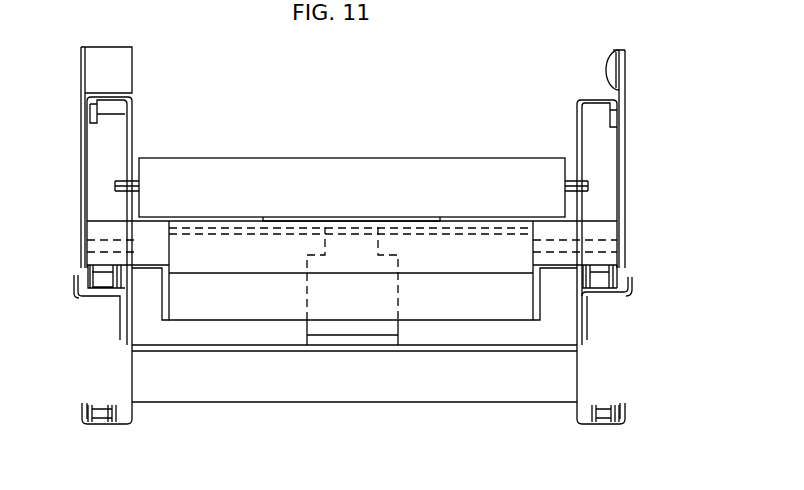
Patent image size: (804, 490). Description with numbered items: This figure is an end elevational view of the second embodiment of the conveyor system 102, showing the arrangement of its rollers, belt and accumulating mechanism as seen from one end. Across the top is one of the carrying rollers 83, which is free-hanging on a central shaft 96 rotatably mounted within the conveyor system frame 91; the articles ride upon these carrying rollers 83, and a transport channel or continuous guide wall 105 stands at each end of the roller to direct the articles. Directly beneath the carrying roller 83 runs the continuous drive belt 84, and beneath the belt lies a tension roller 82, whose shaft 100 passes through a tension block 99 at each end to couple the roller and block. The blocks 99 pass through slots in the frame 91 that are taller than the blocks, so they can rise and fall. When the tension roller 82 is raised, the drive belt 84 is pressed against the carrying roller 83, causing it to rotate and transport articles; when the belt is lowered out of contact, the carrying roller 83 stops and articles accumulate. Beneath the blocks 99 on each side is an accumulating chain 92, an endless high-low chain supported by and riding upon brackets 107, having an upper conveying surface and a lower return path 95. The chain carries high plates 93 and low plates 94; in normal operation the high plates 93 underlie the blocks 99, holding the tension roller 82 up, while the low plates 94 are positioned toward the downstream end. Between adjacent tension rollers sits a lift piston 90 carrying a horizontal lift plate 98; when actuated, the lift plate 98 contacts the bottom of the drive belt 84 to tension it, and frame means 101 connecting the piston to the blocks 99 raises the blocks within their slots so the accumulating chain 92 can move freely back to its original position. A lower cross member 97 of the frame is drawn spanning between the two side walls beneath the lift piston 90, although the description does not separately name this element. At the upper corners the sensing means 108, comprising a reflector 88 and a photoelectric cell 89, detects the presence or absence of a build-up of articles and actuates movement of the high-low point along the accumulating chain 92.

The tension roller 82 is at (448, 262).
The carrying roller 83 is at (420, 178).
The drive belt 84 is at (293, 217).
The reflector 88 is at (607, 66).
The photoelectric cell 89 is at (116, 58).
The lift piston 90 is at (398, 328).
The conveyor system frame 91 is at (622, 157).
The accumulating chain 92 is at (95, 281).
The high plate 93 is at (624, 298).
The low plate 94 is at (606, 412).
The return path 95 is at (103, 412).
The central shaft 96 is at (118, 182).
The frame 97 is at (186, 386).
The lift plate 98 is at (473, 234).
The tension block 99 is at (100, 229).
The shaft 100 is at (100, 246).
The frame means 101 is at (166, 300).
The conveyor system 102 is at (482, 46).
The guide wall 105 is at (133, 134).
The bracket 107 is at (86, 421).
The sensing means 108 is at (614, 50).